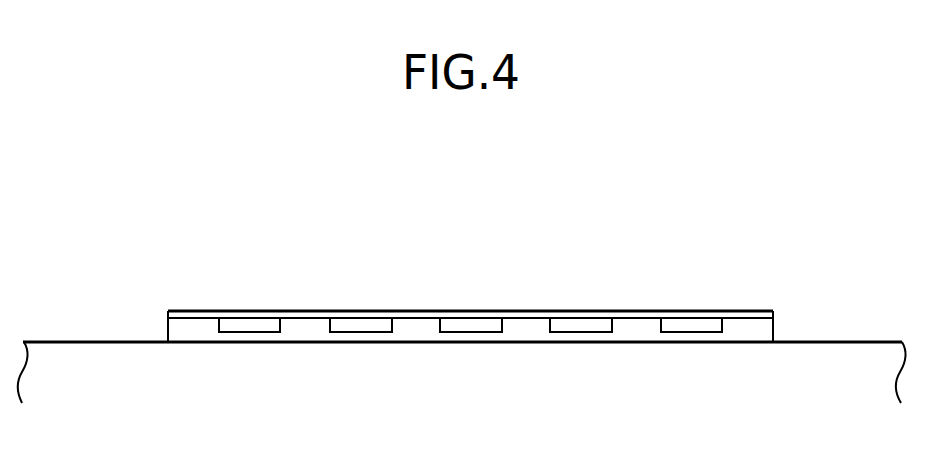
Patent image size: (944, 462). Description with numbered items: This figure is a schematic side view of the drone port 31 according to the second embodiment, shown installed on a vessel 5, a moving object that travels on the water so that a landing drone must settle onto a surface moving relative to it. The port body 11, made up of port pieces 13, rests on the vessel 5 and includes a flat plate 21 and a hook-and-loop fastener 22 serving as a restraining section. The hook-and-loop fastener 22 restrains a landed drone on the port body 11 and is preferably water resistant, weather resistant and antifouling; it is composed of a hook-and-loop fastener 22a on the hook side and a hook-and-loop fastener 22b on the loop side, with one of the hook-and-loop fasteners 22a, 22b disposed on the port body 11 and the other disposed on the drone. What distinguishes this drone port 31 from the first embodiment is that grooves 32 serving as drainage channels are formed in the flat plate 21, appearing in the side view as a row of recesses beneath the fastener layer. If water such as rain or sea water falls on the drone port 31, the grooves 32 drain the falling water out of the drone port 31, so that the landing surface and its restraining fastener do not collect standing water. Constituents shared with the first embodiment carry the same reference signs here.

The vessel 5 is at (78, 341).
The port body 11 is at (449, 286).
The port pieces 13 is at (168, 312).
The flat plate 21 is at (773, 330).
The hook-and-loop fastener 22 is at (612, 311).
The hook-and-loop fastener on the hook side 22a is at (483, 301).
The hook-and-loop fastener on the loop side 22b is at (483, 301).
The drone port 31 is at (587, 223).
The grooves 32 is at (240, 332).